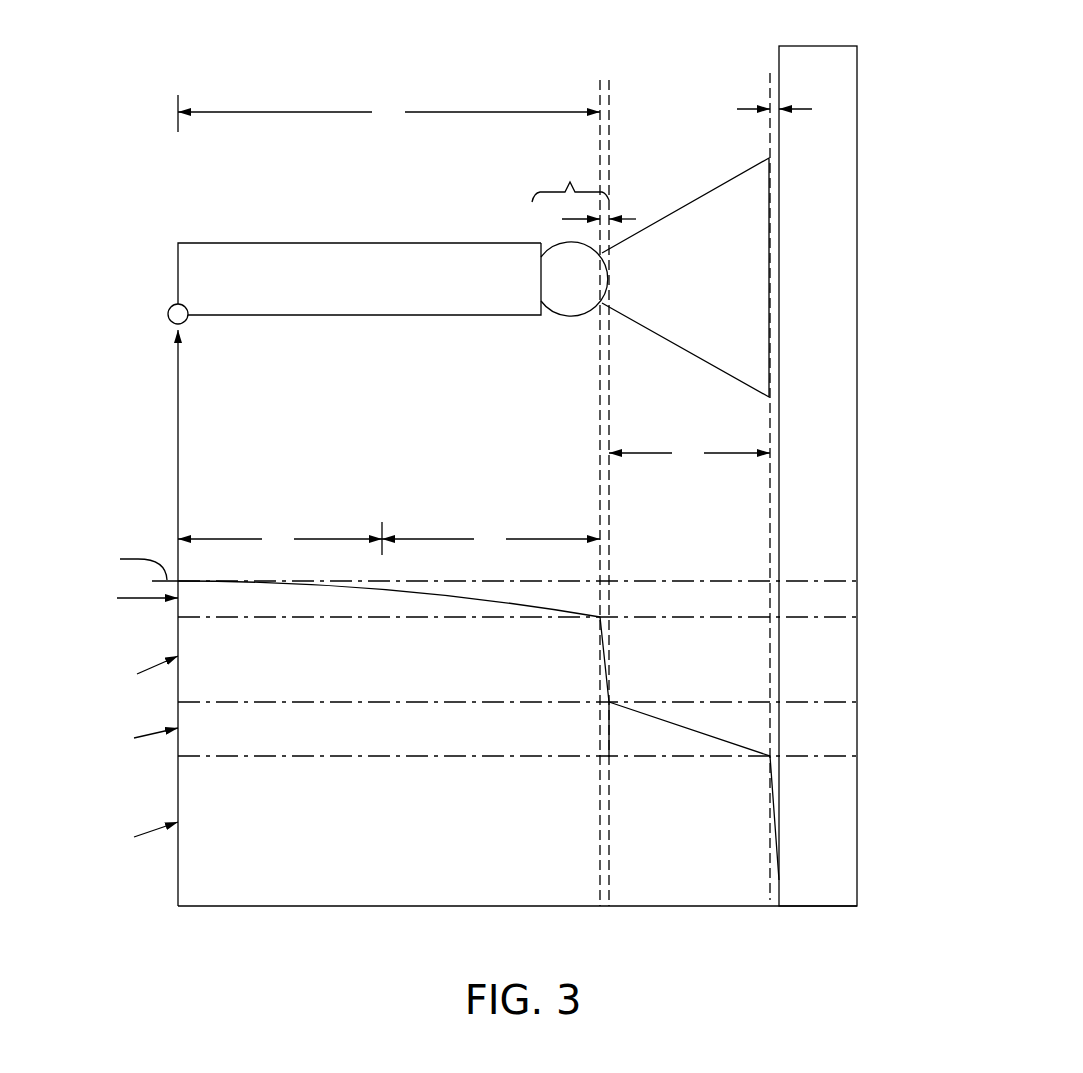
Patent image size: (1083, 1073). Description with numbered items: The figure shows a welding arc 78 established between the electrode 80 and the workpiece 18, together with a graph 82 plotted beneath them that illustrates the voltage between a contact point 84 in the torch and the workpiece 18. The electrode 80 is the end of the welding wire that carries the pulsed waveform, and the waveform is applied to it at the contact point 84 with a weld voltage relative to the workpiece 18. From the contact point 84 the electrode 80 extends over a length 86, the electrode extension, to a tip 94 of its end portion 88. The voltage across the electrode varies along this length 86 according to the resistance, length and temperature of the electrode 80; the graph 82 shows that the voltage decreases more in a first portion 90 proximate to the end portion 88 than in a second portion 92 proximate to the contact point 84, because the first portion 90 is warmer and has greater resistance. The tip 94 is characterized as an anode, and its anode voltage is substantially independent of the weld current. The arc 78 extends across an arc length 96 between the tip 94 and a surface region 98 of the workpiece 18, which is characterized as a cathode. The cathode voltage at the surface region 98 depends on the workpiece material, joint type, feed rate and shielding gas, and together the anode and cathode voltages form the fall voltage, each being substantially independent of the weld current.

The workpiece 18 is at (840, 90).
The welding arc 78 is at (708, 192).
The electrode 80 is at (340, 262).
The graph 82 is at (158, 513).
The contact point 84 is at (170, 306).
The length 86 is at (389, 113).
The end portion 88 is at (570, 184).
The first portion 90 is at (491, 540).
The second portion 92 is at (280, 538).
The tip 94 is at (628, 219).
The arc length 96 is at (689, 454).
The surface region 98 is at (748, 109).